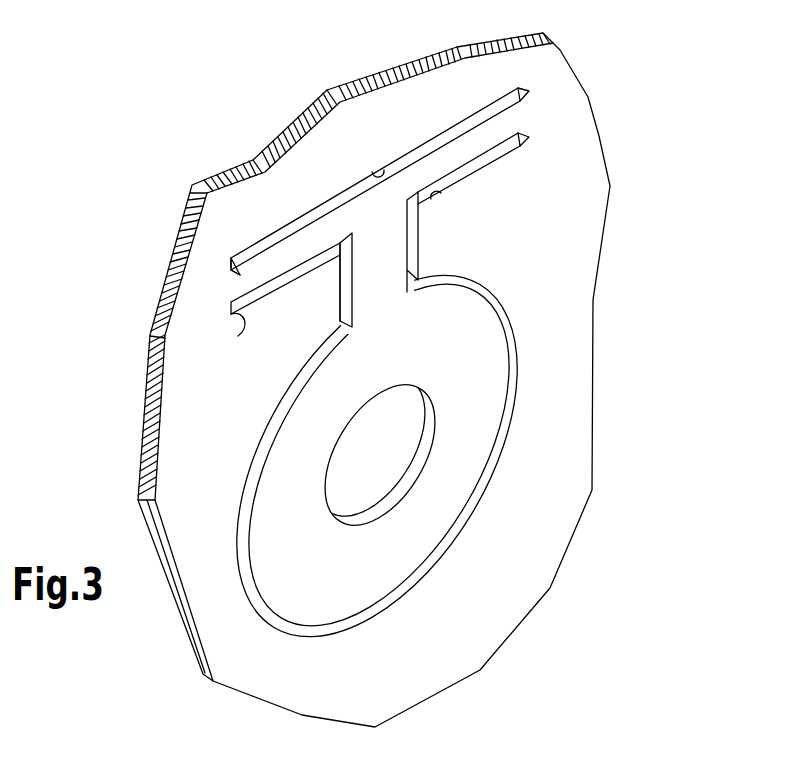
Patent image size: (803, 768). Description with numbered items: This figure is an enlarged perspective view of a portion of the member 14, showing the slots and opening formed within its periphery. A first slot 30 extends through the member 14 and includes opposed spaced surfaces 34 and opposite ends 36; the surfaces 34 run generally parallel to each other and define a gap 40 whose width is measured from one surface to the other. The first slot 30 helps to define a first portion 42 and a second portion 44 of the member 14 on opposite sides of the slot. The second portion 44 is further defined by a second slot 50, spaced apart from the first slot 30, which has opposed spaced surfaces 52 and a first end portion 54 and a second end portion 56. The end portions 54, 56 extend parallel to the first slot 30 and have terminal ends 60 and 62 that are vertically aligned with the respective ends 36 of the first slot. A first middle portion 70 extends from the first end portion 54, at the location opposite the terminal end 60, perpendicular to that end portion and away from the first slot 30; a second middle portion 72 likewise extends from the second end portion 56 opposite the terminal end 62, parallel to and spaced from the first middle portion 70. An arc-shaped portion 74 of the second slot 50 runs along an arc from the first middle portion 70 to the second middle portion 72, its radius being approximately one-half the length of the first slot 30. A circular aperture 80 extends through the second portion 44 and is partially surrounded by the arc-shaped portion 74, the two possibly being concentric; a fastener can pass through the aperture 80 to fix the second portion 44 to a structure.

The member 14 is at (188, 152).
The first portion 42 is at (317, 138).
The first slot 30 is at (318, 213).
The gap 40 is at (453, 137).
The opposite ends 36 is at (529, 91).
The opposed spaced surfaces 34 is at (398, 170).
The first end portion 54 is at (275, 284).
The terminal end 60 is at (238, 336).
The second slot 50 is at (345, 303).
The first middle portion 70 is at (345, 263).
The second middle portion 72 is at (413, 247).
The second end portion 56 is at (483, 165).
The terminal end 62 is at (529, 137).
The opposed spaced surfaces 52 is at (445, 183).
The second portion 44 is at (296, 465).
The arc-shaped portion 74 is at (278, 610).
The aperture 80 is at (381, 450).